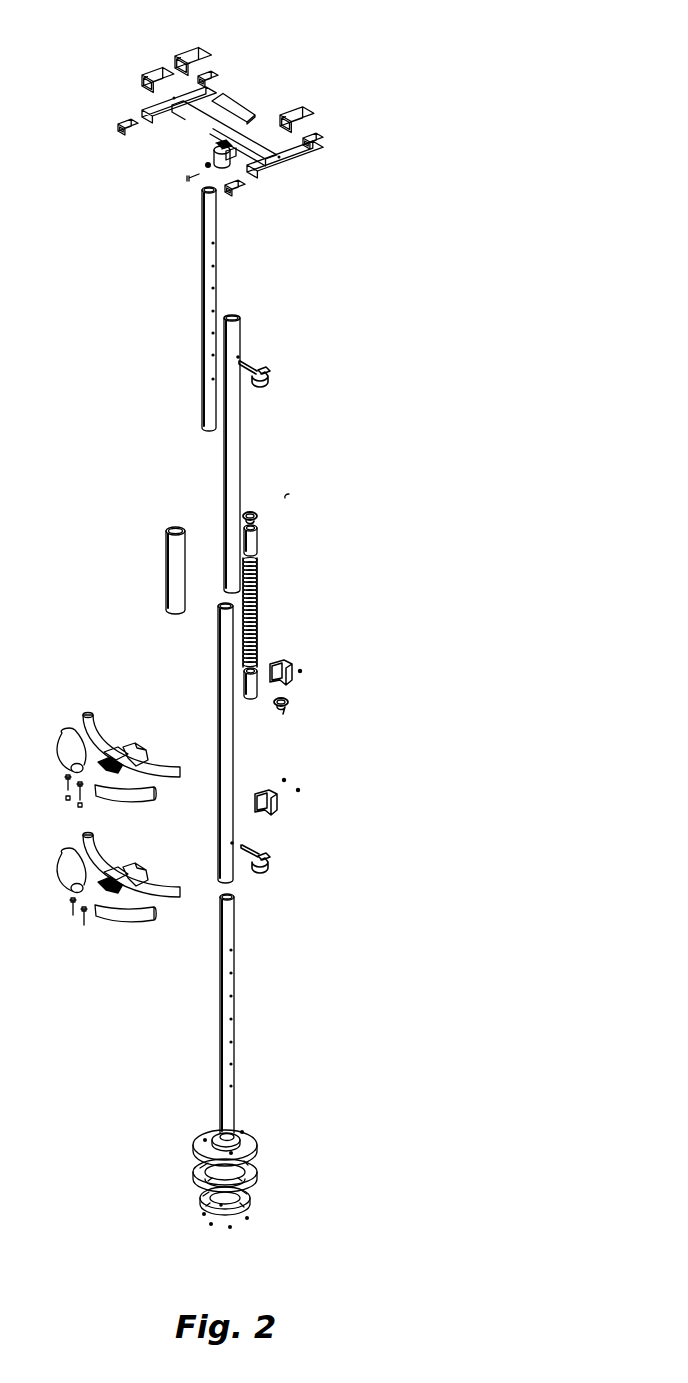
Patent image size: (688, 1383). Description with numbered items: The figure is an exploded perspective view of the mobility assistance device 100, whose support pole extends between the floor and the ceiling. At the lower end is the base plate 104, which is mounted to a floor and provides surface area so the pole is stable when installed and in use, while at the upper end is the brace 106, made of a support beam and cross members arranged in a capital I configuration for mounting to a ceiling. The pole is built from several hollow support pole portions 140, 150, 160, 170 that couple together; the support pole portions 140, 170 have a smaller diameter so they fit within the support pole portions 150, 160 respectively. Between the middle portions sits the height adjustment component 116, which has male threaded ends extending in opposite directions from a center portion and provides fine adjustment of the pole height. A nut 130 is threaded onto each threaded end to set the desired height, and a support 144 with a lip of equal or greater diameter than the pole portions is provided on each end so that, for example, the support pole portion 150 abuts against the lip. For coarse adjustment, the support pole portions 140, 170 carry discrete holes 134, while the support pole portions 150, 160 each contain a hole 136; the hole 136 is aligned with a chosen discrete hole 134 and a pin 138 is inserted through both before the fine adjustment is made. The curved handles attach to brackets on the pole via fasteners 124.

The mobility assistance device 100 is at (416, 102).
The base plate 104 is at (283, 1162).
The brace 106 is at (280, 66).
The height adjustment component 116 is at (255, 612).
The fasteners 124 is at (302, 670).
The nut 130 is at (257, 512).
The discrete holes 134 is at (215, 290).
The hole 136 is at (238, 357).
The pin 138 is at (272, 378).
The support pole portion 140 is at (216, 252).
The support 144 is at (257, 538).
The support pole portion 150 is at (240, 428).
The support pole portion 160 is at (233, 770).
The support pole portion 170 is at (233, 1004).